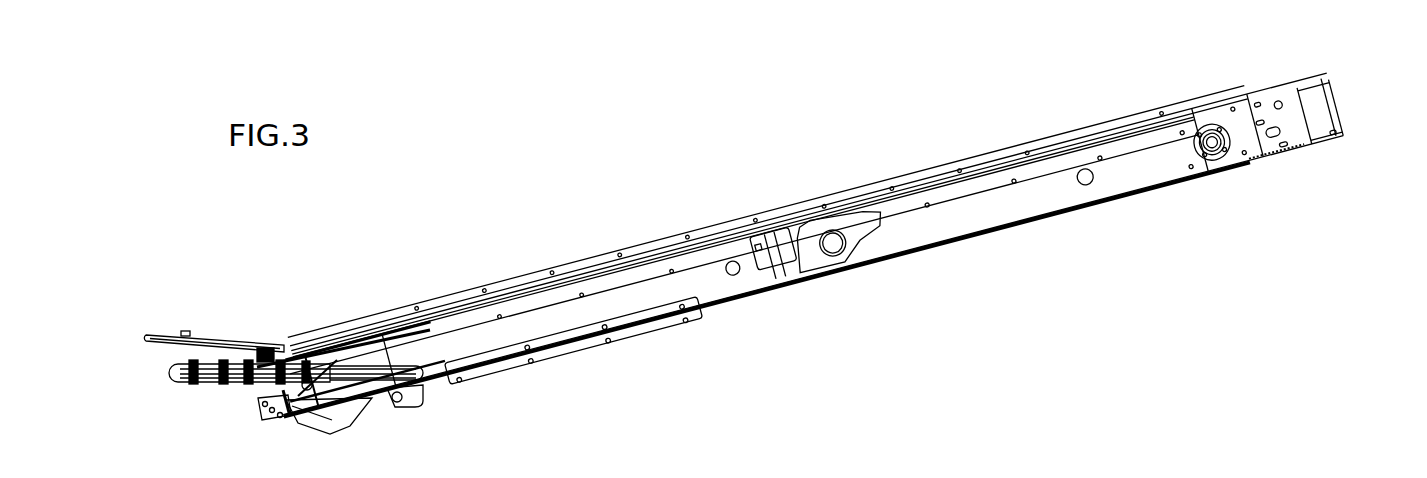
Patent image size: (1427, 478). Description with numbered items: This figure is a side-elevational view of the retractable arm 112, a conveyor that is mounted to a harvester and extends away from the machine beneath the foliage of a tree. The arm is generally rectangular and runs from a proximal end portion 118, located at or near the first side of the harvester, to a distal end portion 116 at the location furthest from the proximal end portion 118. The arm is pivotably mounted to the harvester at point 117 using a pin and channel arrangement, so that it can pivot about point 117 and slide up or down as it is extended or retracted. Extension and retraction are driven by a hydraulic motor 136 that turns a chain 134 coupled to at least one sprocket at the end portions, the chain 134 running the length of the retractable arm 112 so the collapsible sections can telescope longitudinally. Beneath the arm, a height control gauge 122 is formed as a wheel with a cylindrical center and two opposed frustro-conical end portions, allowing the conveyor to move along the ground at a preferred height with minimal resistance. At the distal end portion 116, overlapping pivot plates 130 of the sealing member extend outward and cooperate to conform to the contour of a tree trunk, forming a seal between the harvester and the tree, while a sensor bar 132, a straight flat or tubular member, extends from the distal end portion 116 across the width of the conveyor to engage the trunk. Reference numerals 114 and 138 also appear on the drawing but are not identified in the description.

The retractable arm 112 is at (728, 232).
The conveyor assembly 114 is at (172, 275).
The distal end portion 116 is at (280, 404).
The pivot point 117 is at (838, 253).
The proximal end portion 118 is at (1332, 97).
The height control gauge 122 is at (343, 423).
The pivot plates 130 is at (207, 335).
The sensor bar 132 is at (167, 382).
The chain 134 is at (967, 198).
The hydraulic motor 136 is at (1214, 158).
The brace 138 is at (318, 362).